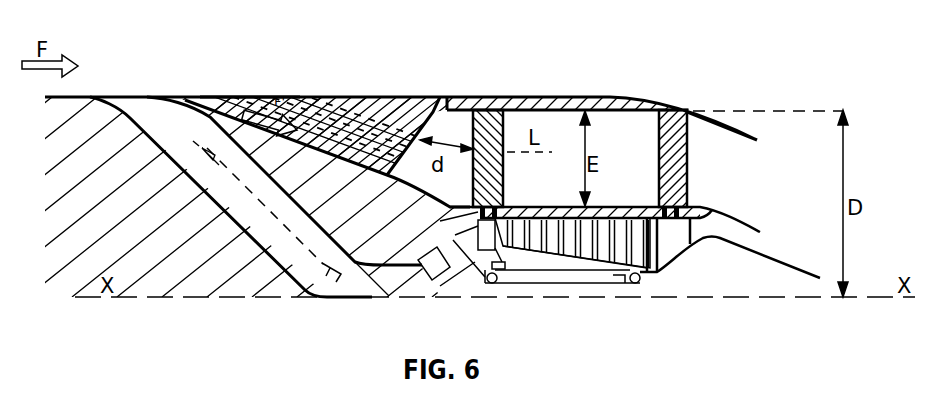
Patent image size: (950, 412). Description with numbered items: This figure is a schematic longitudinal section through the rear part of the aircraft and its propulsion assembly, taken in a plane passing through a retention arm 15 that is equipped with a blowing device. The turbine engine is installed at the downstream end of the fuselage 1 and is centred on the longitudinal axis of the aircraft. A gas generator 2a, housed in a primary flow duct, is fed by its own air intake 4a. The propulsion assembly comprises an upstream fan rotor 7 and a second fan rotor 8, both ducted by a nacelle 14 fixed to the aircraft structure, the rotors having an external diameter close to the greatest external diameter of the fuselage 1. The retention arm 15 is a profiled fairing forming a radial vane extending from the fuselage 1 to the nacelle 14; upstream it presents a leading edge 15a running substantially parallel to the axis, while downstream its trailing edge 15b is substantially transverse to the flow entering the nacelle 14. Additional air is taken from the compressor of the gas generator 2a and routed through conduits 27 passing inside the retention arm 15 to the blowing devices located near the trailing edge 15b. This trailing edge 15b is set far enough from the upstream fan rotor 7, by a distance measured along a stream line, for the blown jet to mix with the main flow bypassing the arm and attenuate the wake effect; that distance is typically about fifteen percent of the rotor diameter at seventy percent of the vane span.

The fuselage 1 is at (233, 110).
The gas generator 2a is at (227, 195).
The air intake 4a is at (138, 116).
The upstream fan rotor 7 is at (487, 137).
The fan rotor 8 is at (677, 142).
The nacelle 14 is at (622, 98).
The retention arm 15 is at (328, 110).
The leading edge 15a is at (265, 97).
The trailing edge 15b is at (440, 119).
The conduits 27 is at (387, 118).